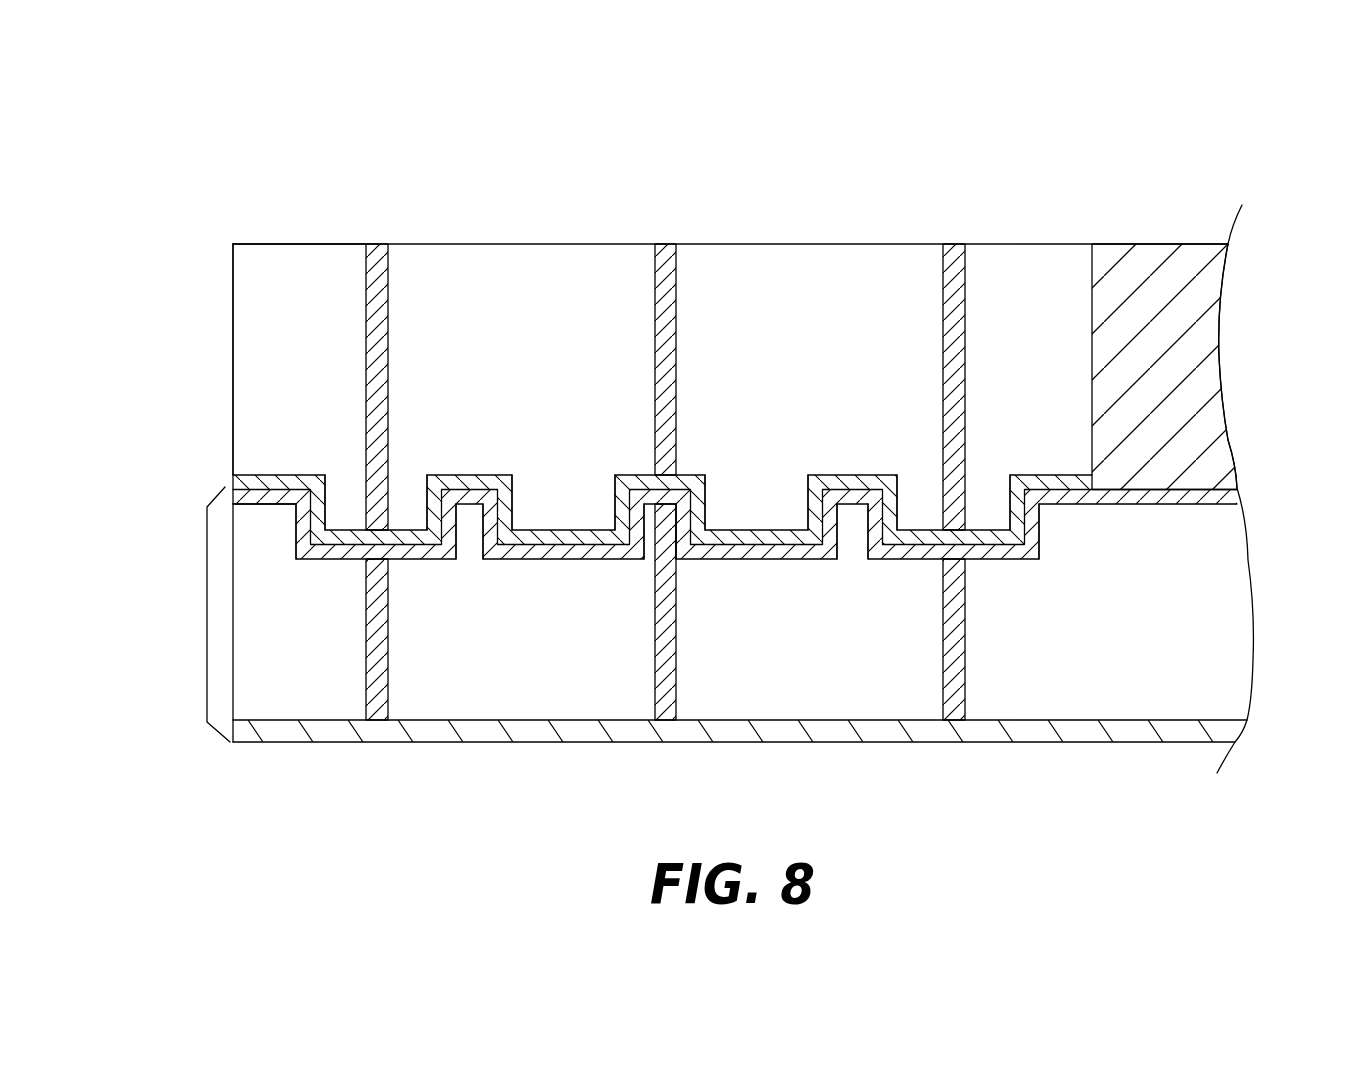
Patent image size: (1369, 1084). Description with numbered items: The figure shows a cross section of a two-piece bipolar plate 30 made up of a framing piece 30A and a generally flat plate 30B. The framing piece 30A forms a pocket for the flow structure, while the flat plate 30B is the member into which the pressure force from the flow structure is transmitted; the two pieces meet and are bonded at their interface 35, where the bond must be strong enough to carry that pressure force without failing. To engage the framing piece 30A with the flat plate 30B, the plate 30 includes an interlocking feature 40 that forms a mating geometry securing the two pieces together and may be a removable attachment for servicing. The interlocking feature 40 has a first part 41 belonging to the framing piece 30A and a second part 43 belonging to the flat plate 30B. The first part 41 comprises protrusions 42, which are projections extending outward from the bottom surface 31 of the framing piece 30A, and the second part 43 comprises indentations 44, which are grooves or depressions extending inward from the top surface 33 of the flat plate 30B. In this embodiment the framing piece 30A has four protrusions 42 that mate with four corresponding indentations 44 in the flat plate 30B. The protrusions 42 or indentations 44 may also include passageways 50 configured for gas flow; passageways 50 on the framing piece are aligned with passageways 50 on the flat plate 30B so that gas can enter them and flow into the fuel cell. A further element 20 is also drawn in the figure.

The substrate 20 is at (1163, 297).
The bipolar plate 30 is at (1262, 147).
The framing piece 30A is at (302, 272).
The flat plate 30B is at (207, 625).
The bottom surface 31 is at (268, 475).
The top surface 33 is at (247, 506).
The interface 35 is at (525, 560).
The interlocking feature 40 is at (666, 557).
The first part 41 is at (237, 452).
The protrusion 42 is at (405, 503).
The second part 43 is at (292, 556).
The indentation 44 is at (412, 560).
The passageway 50 is at (380, 283).